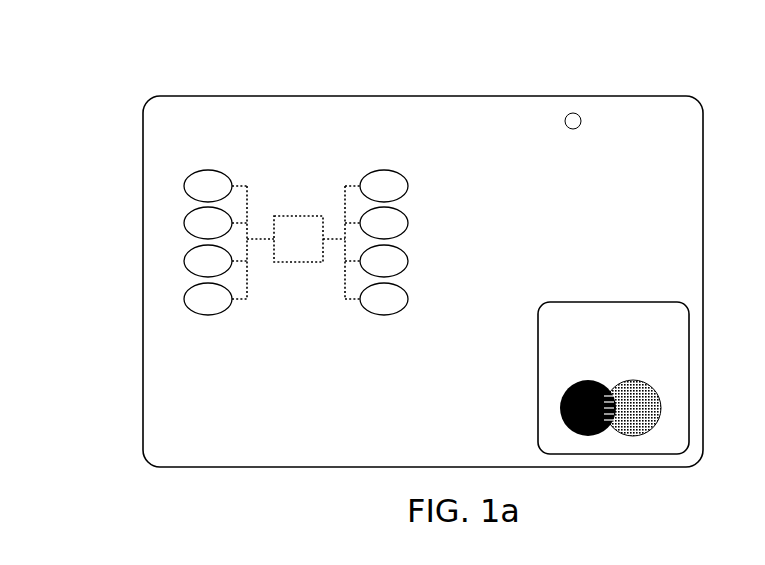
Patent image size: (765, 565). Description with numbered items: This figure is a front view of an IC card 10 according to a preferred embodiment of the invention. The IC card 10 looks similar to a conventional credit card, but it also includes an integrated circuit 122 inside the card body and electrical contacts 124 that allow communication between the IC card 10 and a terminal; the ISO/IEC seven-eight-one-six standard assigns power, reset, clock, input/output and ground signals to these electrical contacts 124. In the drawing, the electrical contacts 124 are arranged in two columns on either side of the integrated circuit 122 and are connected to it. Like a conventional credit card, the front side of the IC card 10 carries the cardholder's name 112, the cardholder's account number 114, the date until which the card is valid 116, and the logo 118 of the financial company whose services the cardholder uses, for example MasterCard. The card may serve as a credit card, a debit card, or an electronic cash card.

The credit card 10 is at (457, 97).
The cardholder's name 112 is at (219, 443).
The cardholder's account number 114 is at (167, 340).
The date until which the card is valid 116 is at (398, 378).
The logo 118 is at (637, 442).
The integrated circuit 122 is at (298, 216).
The electrical contacts 124 is at (183, 222).